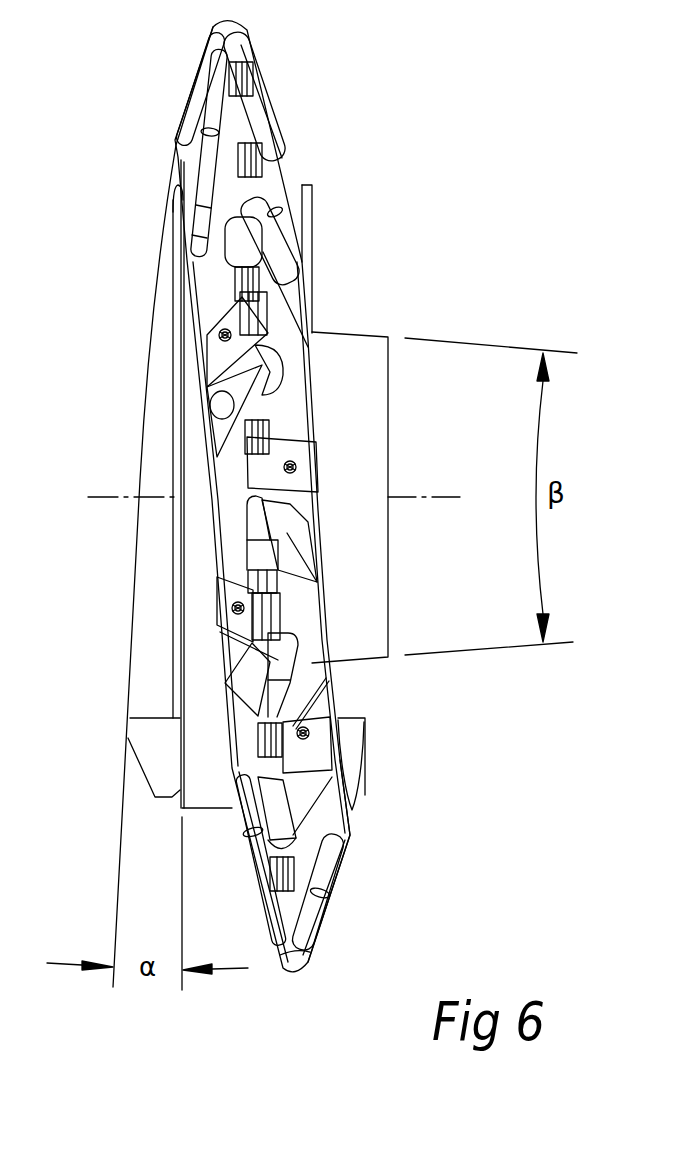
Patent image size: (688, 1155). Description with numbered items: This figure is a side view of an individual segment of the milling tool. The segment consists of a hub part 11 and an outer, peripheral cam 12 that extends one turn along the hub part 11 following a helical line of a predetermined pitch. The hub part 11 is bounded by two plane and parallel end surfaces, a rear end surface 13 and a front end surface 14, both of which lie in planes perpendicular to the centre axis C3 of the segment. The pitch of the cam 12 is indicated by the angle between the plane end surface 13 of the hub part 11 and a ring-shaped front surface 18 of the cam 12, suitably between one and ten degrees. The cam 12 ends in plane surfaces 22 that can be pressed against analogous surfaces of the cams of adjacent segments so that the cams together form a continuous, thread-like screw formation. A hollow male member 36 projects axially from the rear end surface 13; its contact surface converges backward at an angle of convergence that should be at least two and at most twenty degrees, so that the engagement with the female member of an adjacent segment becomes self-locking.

The hub part 11 is at (304, 182).
The peripheral cam 12 is at (378, 808).
The rear end surface 13 is at (313, 240).
The front end surface 14 is at (180, 539).
The front surface of the cam 18 is at (145, 412).
The plane surfaces 22 is at (174, 757).
The male member 36 is at (373, 326).
The centre axis C3 is at (413, 497).